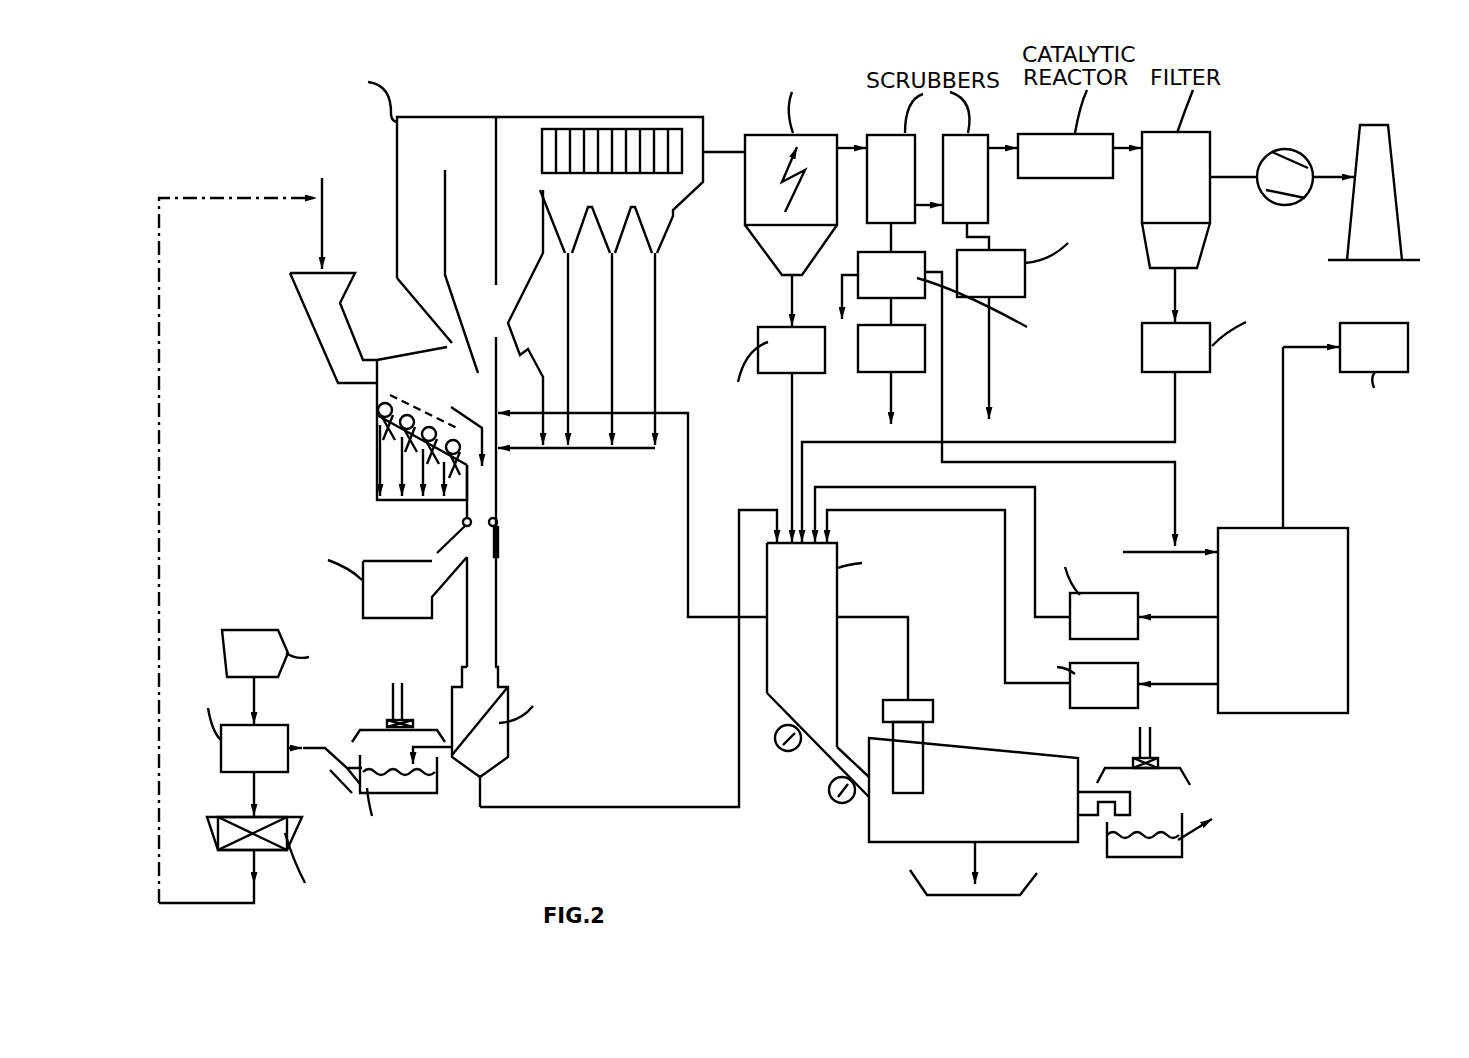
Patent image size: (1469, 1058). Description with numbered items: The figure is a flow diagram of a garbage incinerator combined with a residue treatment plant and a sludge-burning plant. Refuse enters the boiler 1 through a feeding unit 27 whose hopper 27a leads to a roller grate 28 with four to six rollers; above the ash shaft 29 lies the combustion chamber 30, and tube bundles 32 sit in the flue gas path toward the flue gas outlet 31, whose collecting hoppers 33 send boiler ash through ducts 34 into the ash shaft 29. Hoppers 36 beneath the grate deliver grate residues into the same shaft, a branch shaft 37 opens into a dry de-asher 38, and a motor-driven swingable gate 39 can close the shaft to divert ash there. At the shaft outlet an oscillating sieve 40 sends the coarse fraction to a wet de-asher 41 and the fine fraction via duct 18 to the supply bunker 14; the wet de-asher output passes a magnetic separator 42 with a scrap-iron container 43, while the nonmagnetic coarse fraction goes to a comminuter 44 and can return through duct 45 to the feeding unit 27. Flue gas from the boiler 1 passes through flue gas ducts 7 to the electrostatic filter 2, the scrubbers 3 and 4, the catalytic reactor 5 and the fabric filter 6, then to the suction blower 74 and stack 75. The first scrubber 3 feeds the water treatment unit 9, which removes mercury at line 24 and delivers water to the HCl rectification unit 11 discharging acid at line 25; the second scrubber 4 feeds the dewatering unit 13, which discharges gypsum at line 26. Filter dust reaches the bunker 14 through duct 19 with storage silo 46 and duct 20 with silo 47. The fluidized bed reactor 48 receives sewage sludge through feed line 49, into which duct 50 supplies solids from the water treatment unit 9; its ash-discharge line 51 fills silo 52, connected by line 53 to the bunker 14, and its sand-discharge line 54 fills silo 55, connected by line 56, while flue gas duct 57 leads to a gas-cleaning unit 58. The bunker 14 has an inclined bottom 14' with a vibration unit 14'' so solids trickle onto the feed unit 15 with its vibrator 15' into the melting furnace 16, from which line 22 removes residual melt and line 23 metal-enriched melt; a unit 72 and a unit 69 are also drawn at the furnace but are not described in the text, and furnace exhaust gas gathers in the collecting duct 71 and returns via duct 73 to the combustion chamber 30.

The boiler 1 is at (429, 179).
The flue gas outlet 31 is at (484, 227).
The tube bundles 32 is at (558, 128).
The collecting hoppers 33 is at (660, 232).
The ducts 34 is at (618, 452).
The electrostatic filter 2 is at (770, 197).
The first scrubber 3 is at (900, 197).
The second scrubber 4 is at (974, 197).
The catalytic reactor 5 is at (1066, 169).
The fabric filter 6 is at (1178, 196).
The flue gas ducts 7 is at (988, 153).
The water treatment unit 9 is at (897, 290).
The HCl rectification unit 11 is at (904, 367).
The dewatering unit 13 is at (1000, 289).
The line 24 is at (842, 298).
The line 25 is at (889, 385).
The line 26 is at (991, 394).
The storage silo 46 is at (805, 364).
The silo 47 is at (1183, 361).
The duct 19 is at (790, 429).
The duct 20 is at (1122, 442).
The duct 50 is at (1124, 462).
The feed line 49 is at (1135, 552).
The fluidized bed reactor 48 is at (1330, 600).
The flue gas duct 57 is at (1284, 487).
The gas-cleaning unit 58 is at (1408, 327).
The suction blower 74 is at (1292, 160).
The stack 75 is at (1378, 185).
The feeding unit 27 is at (320, 368).
The hopper 27a is at (303, 300).
The roller grate 28 is at (378, 410).
The combustion chamber 30 is at (434, 393).
The hoppers 36 is at (410, 457).
The ash shaft 29 is at (483, 490).
The ash shaft branch 37 is at (450, 540).
The dry de-asher 38 is at (408, 607).
The swingable gate 39 is at (498, 535).
The scrap-iron container 43 is at (222, 651).
The magnetic separator 42 is at (264, 762).
The wet de-asher 41 is at (398, 761).
The oscillating sieve 40 is at (510, 757).
The comminuter 44 is at (209, 832).
The duct 45 is at (250, 870).
The supply bunker 14 is at (871, 643).
The bottom 14' is at (806, 745).
The vibration unit 14'' is at (774, 758).
The feed unit 15 is at (821, 799).
The vibrator 15' is at (840, 827).
The melting furnace 16 is at (984, 805).
The duct 18 is at (620, 805).
The line 53 is at (836, 487).
The line 56 is at (903, 510).
The silo 52 is at (1113, 627).
The silo 55 is at (1108, 696).
The ash-discharge line 51 is at (1180, 615).
The sand-discharge line 54 is at (1182, 683).
The duct 73 is at (908, 643).
The feed device 72 is at (917, 700).
The collecting duct 71 is at (910, 772).
The water supply 69 is at (1168, 804).
The line 22 is at (1183, 845).
The line 23 is at (978, 868).